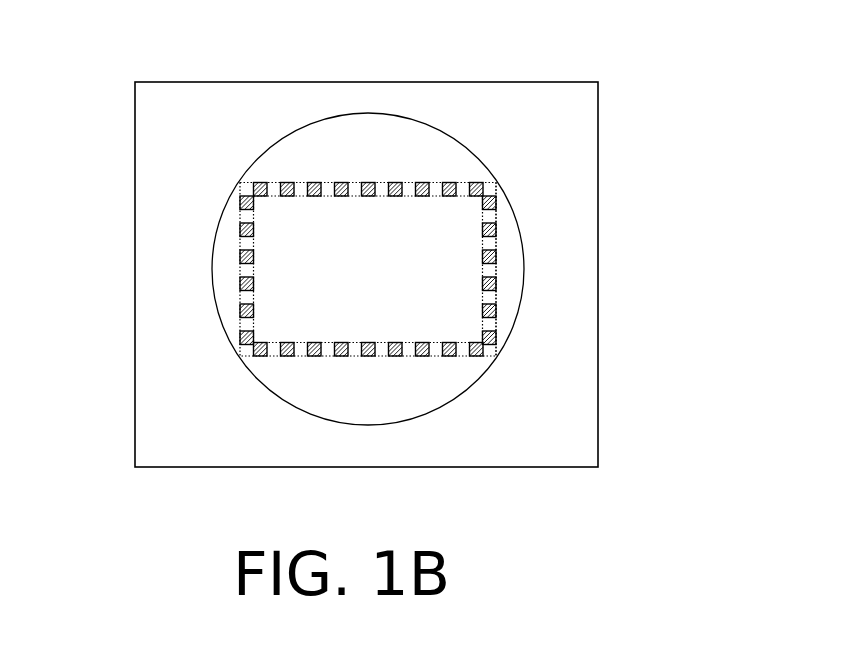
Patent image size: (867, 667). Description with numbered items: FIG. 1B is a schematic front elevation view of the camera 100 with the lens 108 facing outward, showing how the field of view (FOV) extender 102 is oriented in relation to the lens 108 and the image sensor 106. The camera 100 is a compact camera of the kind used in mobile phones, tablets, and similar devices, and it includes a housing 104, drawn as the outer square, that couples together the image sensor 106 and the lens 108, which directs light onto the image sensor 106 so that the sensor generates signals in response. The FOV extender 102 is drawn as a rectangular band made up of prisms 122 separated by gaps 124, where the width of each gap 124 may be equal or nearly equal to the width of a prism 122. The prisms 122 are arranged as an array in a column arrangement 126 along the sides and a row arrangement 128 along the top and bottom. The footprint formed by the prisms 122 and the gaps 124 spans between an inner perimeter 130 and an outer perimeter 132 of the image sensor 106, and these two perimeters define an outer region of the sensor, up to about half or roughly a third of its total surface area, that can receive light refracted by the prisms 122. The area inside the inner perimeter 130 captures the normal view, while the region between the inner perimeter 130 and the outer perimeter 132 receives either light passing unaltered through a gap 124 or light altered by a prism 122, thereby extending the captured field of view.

The camera 100 is at (645, 27).
The FOV extender 102 is at (467, 362).
The housing 104 is at (159, 81).
The image sensor 106 is at (290, 264).
The lens 108 is at (250, 162).
The prism 122 is at (380, 188).
The gap 124 is at (327, 188).
The column arrangement 126 is at (500, 300).
The row arrangement 128 is at (458, 173).
The inner perimeter 130 is at (484, 239).
The outer perimeter 132 is at (496, 213).